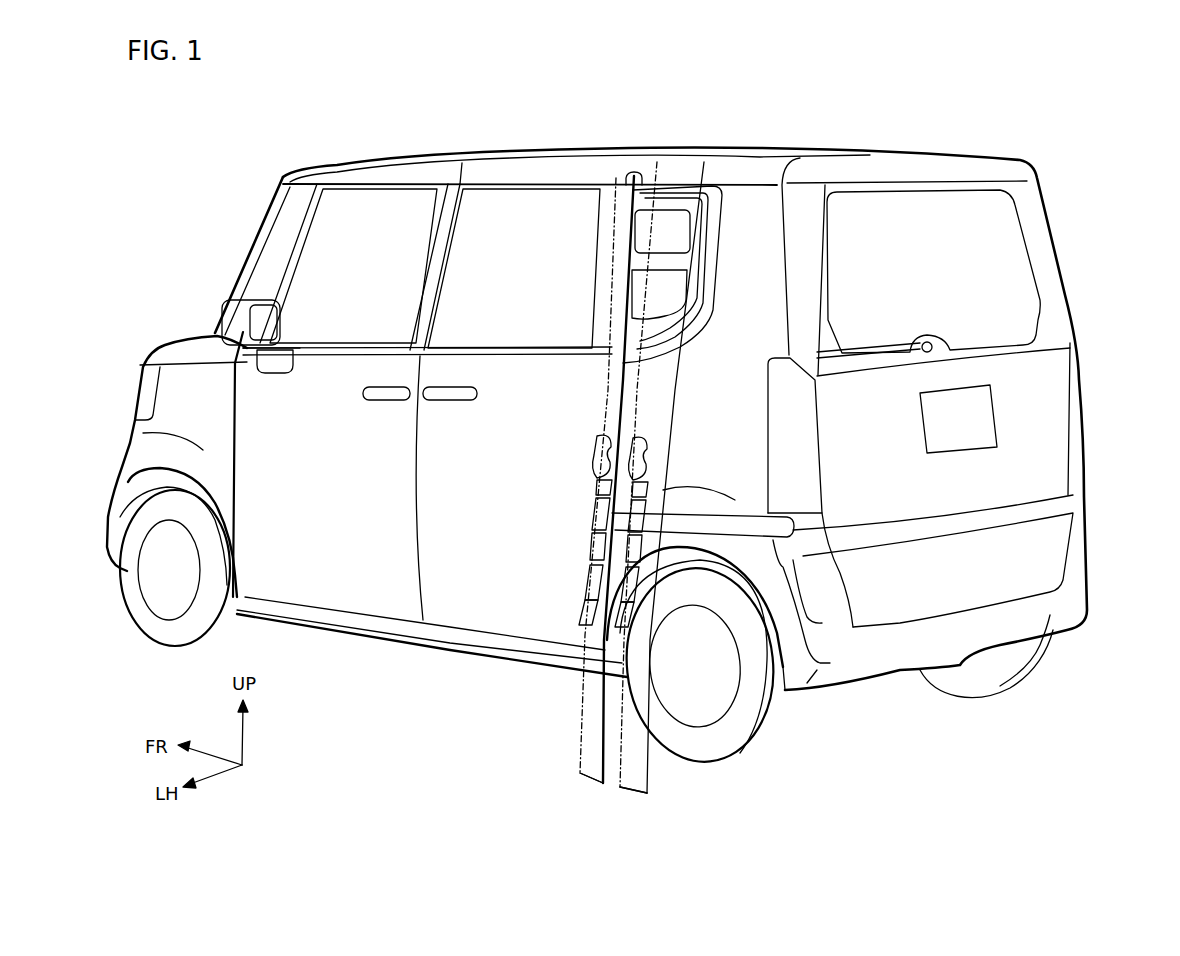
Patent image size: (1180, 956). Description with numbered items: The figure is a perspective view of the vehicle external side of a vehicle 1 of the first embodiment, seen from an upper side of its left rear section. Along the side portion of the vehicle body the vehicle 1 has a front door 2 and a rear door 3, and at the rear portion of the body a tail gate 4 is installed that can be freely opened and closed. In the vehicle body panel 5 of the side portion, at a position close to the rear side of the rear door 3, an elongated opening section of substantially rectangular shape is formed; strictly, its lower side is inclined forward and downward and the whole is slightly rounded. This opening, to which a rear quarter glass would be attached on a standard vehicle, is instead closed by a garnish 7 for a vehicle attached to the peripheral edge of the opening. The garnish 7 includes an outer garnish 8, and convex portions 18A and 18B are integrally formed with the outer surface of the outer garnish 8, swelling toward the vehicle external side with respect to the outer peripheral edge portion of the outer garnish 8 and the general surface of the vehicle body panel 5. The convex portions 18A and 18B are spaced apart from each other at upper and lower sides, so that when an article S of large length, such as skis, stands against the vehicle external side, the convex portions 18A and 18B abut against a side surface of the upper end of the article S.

The vehicle 1 is at (792, 131).
The front door 2 is at (243, 430).
The rear door 3 is at (507, 540).
The tail gate 4 is at (1013, 463).
The vehicle body panel 5 is at (757, 217).
The garnish for a vehicle 7 is at (703, 178).
The outer garnish 8 is at (652, 178).
The convex portion 18A is at (647, 227).
The convex portion 18B is at (633, 300).
The article S is at (617, 770).